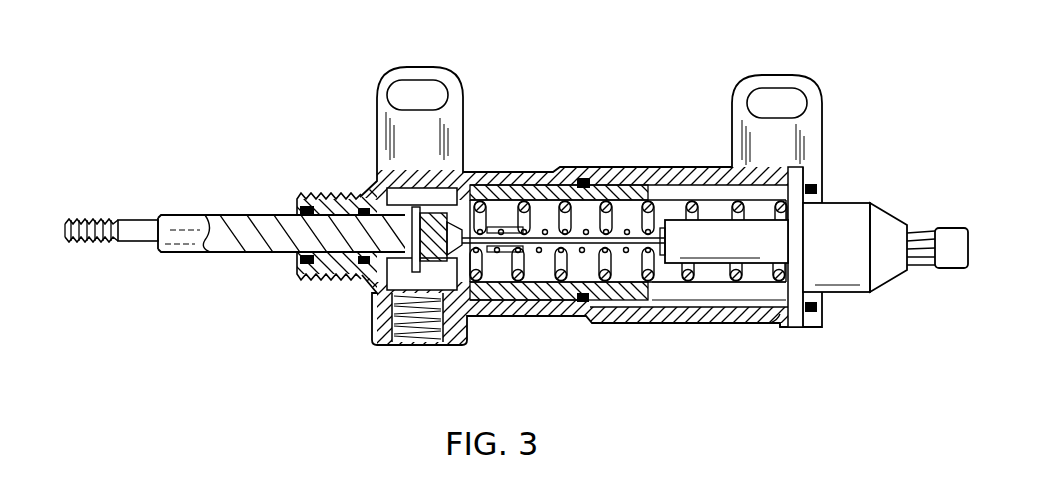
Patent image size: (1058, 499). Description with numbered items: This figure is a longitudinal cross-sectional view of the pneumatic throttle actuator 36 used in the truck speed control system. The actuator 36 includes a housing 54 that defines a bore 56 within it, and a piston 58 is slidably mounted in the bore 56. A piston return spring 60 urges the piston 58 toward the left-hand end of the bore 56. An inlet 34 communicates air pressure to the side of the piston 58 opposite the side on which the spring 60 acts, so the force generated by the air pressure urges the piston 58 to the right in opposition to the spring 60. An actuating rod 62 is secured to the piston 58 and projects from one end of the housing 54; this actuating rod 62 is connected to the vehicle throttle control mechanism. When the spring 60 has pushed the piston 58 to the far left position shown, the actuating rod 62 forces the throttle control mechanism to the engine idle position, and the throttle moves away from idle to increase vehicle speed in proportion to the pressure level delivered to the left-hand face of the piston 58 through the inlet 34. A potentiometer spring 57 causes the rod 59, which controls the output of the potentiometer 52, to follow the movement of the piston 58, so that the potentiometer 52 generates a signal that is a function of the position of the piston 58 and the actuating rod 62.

The inlet 34 is at (452, 333).
The pneumatic actuator 36 is at (741, 63).
The potentiometer 52 is at (853, 210).
The housing 54 is at (708, 313).
The bore 56 is at (685, 298).
The potentiometer spring 57 is at (587, 232).
The piston 58 is at (523, 196).
The rod 59 is at (574, 296).
The piston return spring 60 is at (692, 207).
The actuating rod 62 is at (254, 226).